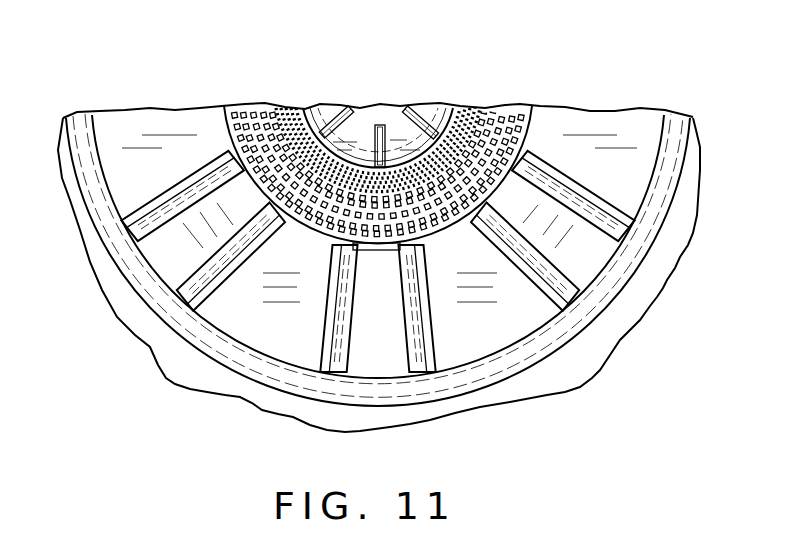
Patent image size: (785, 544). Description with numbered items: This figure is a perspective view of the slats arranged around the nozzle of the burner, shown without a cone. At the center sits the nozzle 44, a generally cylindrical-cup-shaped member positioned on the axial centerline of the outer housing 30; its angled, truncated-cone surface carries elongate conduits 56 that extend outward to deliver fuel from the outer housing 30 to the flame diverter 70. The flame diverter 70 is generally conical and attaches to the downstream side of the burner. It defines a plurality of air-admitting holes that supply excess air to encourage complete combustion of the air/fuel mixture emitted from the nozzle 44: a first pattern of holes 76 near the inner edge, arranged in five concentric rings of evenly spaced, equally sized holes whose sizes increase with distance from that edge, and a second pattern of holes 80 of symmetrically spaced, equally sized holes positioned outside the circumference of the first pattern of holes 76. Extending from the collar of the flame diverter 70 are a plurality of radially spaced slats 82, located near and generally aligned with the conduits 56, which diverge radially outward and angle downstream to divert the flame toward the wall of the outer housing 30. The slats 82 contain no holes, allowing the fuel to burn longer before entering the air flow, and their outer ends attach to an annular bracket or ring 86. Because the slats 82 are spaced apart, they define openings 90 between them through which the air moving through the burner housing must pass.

The outer housing 30 is at (503, 330).
The nozzle 44 is at (366, 126).
The conduits 56 is at (427, 117).
The flame diverter 70 is at (520, 113).
The first pattern of holes 76 is at (281, 107).
The second pattern of holes 80 is at (242, 122).
The slats 82 is at (177, 242).
The annular bracket or ring 86 is at (667, 203).
The openings 90 is at (262, 308).